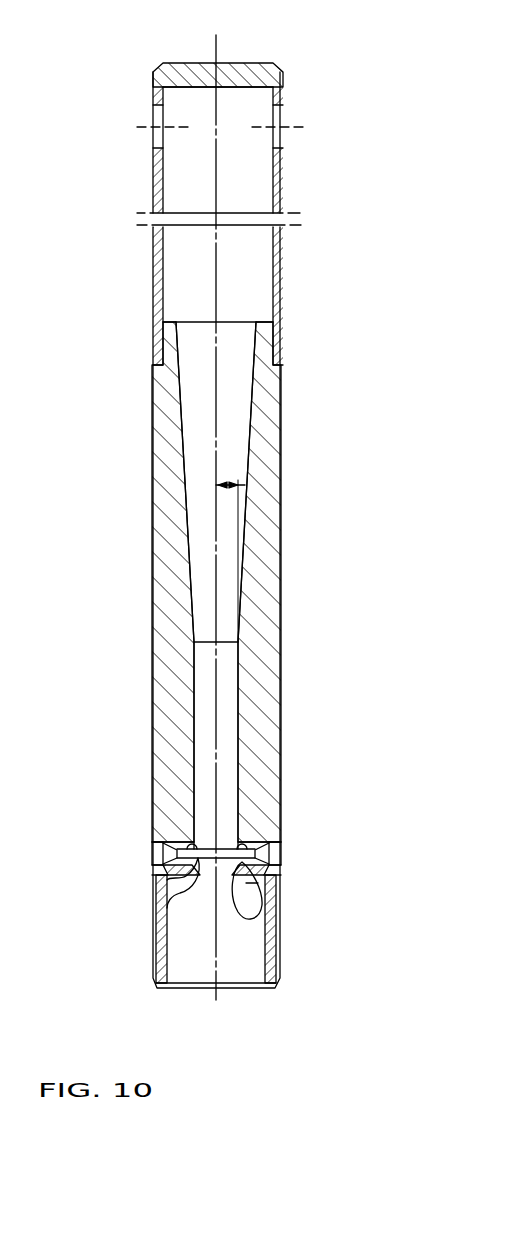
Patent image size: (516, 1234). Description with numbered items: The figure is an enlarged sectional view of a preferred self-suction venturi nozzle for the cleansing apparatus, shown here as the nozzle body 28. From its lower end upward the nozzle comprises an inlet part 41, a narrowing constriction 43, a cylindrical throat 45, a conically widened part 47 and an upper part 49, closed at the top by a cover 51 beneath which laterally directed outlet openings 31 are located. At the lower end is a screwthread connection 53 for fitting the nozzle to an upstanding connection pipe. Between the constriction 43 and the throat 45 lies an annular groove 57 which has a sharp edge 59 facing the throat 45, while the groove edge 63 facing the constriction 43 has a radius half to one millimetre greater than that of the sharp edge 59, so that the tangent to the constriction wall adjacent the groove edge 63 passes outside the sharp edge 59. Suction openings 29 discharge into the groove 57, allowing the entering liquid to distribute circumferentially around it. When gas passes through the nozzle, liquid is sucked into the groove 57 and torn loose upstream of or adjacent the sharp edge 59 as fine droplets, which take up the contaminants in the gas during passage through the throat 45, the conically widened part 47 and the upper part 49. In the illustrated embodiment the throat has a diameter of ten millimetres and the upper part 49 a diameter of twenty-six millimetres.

The nozzle body 28 is at (152, 580).
The cover 51 is at (247, 65).
The outlet openings 31 is at (160, 112).
The upper part 49 is at (257, 195).
The conically widened part 47 is at (235, 423).
The cylindrical throat 45 is at (230, 673).
The sharp edge 59 is at (207, 845).
The suction openings 29 is at (153, 845).
The annular groove 57 is at (153, 873).
The narrowing constriction 43 is at (280, 888).
The screwthread connection 53 is at (153, 908).
The groove edge 63 is at (280, 925).
The inlet part 41 is at (177, 958).